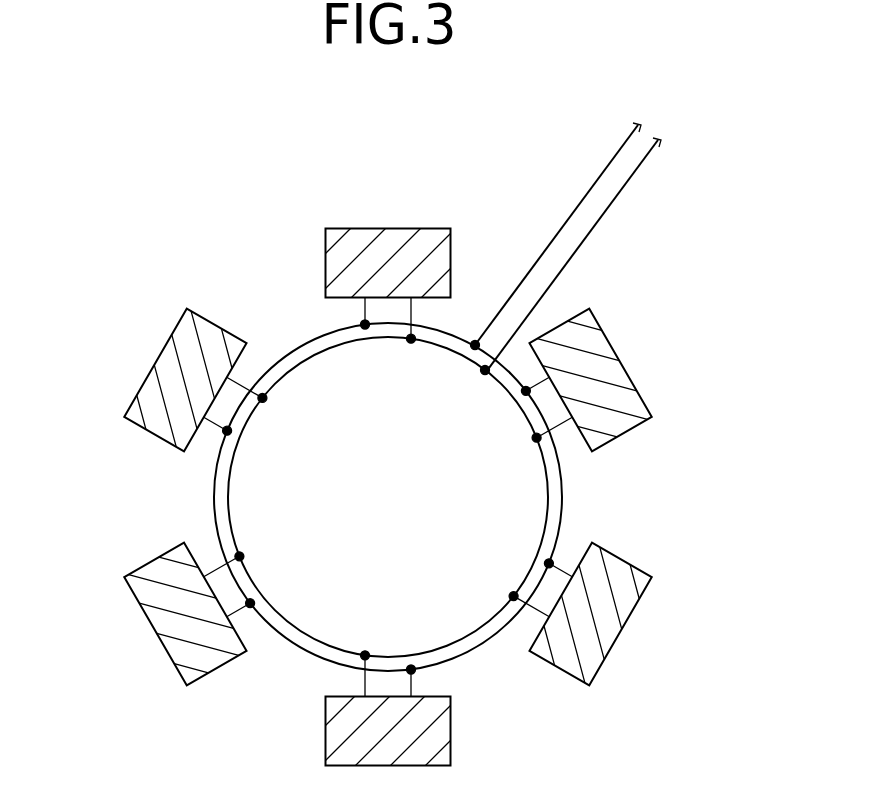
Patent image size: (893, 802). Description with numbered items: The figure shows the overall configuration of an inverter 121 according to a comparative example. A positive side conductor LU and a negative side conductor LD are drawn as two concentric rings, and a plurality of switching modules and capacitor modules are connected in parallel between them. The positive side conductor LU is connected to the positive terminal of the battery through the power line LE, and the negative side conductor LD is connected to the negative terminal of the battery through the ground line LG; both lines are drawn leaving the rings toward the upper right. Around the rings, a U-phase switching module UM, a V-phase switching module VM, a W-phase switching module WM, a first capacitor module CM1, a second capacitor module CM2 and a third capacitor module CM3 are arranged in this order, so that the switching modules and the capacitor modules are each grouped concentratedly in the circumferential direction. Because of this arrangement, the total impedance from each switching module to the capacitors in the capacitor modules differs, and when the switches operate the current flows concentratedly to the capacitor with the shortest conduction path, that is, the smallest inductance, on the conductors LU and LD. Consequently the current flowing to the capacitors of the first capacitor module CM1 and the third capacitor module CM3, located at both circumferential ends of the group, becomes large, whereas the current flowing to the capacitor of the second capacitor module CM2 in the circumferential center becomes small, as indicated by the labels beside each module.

The negative side conductor LD is at (213, 489).
The positive side conductor LU is at (231, 478).
The first capacitor module CM1 is at (451, 248).
The second capacitor module CM2 is at (207, 316).
The third capacitor module CM3 is at (157, 561).
The U-phase switching module UM is at (602, 452).
The V-phase switching module VM is at (568, 673).
The W-phase switching module WM is at (325, 748).
The ground line LG is at (625, 147).
The power line LE is at (653, 150).
The inverter 121 is at (616, 229).